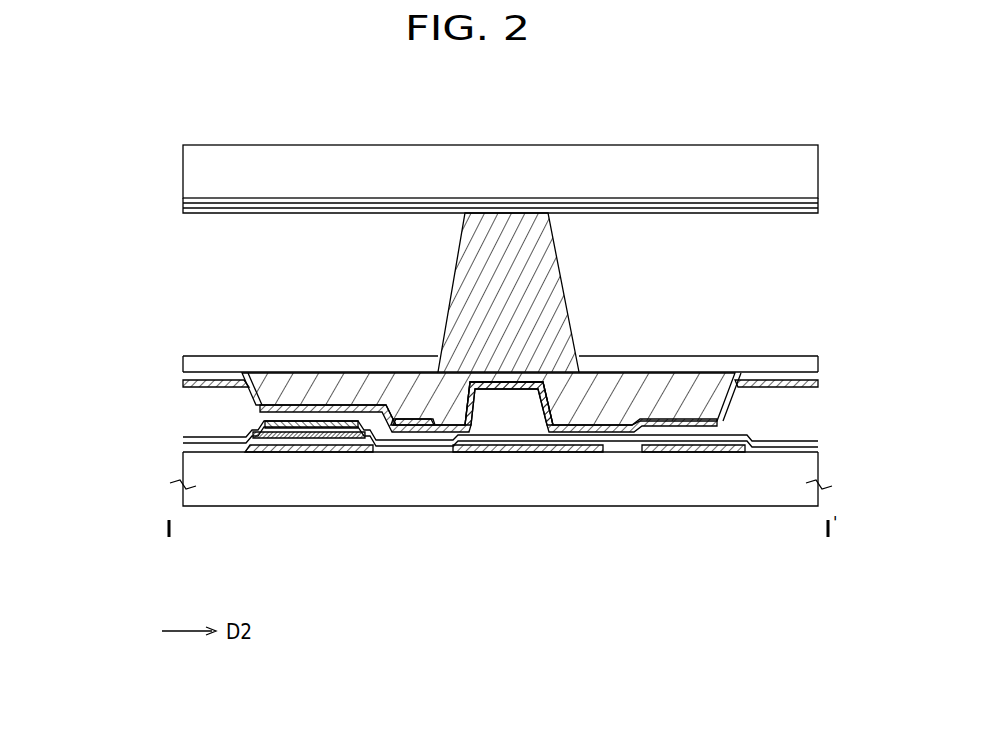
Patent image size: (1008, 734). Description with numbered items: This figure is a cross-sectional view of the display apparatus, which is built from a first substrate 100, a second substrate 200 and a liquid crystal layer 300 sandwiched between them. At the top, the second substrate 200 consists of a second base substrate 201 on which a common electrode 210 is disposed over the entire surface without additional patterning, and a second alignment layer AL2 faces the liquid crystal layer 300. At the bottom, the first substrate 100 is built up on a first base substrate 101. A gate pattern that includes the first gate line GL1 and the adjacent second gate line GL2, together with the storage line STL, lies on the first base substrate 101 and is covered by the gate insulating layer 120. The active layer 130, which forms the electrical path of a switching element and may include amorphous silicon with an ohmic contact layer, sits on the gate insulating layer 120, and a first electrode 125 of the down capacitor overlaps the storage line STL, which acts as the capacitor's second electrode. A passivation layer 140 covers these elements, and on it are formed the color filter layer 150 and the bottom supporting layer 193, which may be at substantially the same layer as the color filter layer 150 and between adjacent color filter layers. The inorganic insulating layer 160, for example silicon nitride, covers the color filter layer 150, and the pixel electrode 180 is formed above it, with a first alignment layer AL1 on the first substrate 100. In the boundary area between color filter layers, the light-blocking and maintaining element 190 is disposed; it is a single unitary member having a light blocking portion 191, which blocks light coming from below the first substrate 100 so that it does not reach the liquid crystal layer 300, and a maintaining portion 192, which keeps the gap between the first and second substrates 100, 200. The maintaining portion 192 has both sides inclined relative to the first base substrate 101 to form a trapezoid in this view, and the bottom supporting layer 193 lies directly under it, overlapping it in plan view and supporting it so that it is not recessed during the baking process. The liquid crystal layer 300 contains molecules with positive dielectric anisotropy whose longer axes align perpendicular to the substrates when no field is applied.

The second substrate 200 is at (440, 192).
The second base substrate 201 is at (183, 172).
The common electrode 210 is at (183, 200).
The second alignment layer AL2 is at (463, 223).
The liquid crystal layer 300 is at (178, 350).
The first substrate 100 is at (447, 451).
The first base substrate 101 is at (183, 490).
The first alignment layer AL1 is at (183, 357).
The pixel electrode 180 is at (183, 383).
The inorganic insulating layer 160 is at (183, 388).
The color filter layer 150 is at (183, 407).
The bottom supporting layer 193 is at (490, 408).
The passivation layer 140 is at (183, 439).
The storage line STL is at (315, 428).
The active layer 130 is at (266, 437).
The first electrode 125 is at (335, 427).
The gate insulating layer 120 is at (183, 447).
The first gate line GL1 is at (535, 450).
The second gate line GL2 is at (700, 450).
The light-blocking and maintaining element 190 is at (587, 451).
The light blocking portion 191 is at (640, 385).
The maintaining portion 192 is at (517, 290).